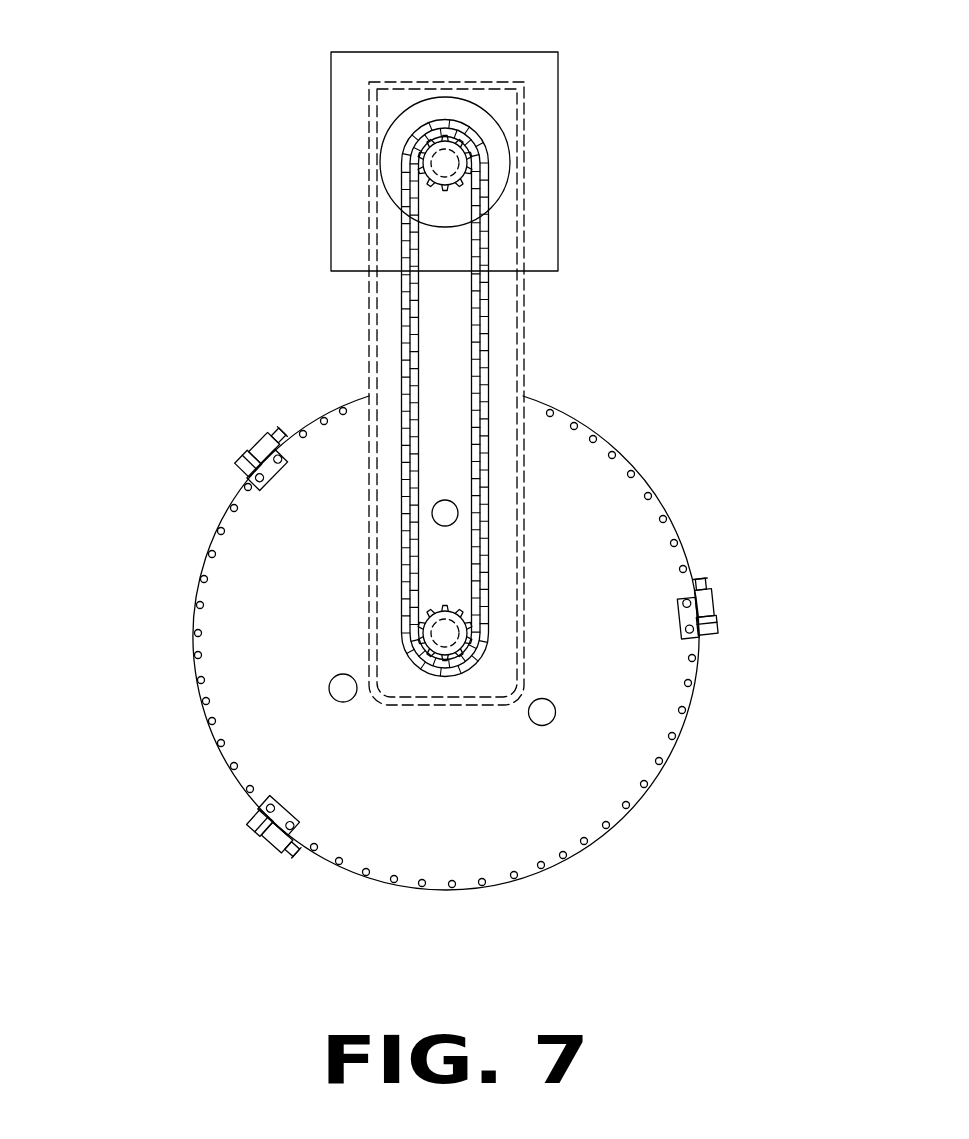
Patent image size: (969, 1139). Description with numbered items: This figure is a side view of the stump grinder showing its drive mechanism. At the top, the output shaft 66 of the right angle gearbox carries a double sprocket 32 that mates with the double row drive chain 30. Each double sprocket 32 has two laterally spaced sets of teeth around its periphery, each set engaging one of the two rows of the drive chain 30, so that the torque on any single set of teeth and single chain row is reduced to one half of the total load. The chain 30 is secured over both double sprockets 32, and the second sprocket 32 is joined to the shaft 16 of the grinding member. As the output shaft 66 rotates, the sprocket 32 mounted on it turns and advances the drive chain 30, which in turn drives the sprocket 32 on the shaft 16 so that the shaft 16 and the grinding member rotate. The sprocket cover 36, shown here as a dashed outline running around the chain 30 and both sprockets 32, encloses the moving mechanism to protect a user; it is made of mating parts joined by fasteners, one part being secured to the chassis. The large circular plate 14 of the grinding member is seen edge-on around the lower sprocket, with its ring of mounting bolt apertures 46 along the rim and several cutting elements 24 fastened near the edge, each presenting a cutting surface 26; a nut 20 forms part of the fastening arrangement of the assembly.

The plate 14 is at (262, 787).
The shaft 16 is at (447, 636).
The nut 20 is at (329, 691).
The cutting element 24 is at (252, 444).
The cutting surface 26 is at (718, 636).
The double row drive chain 30 is at (402, 347).
The double sprocket 32 is at (331, 145).
The sprocket cover 36 is at (525, 356).
The mounting bolt aperture 46 is at (213, 723).
The output shaft 66 is at (445, 162).